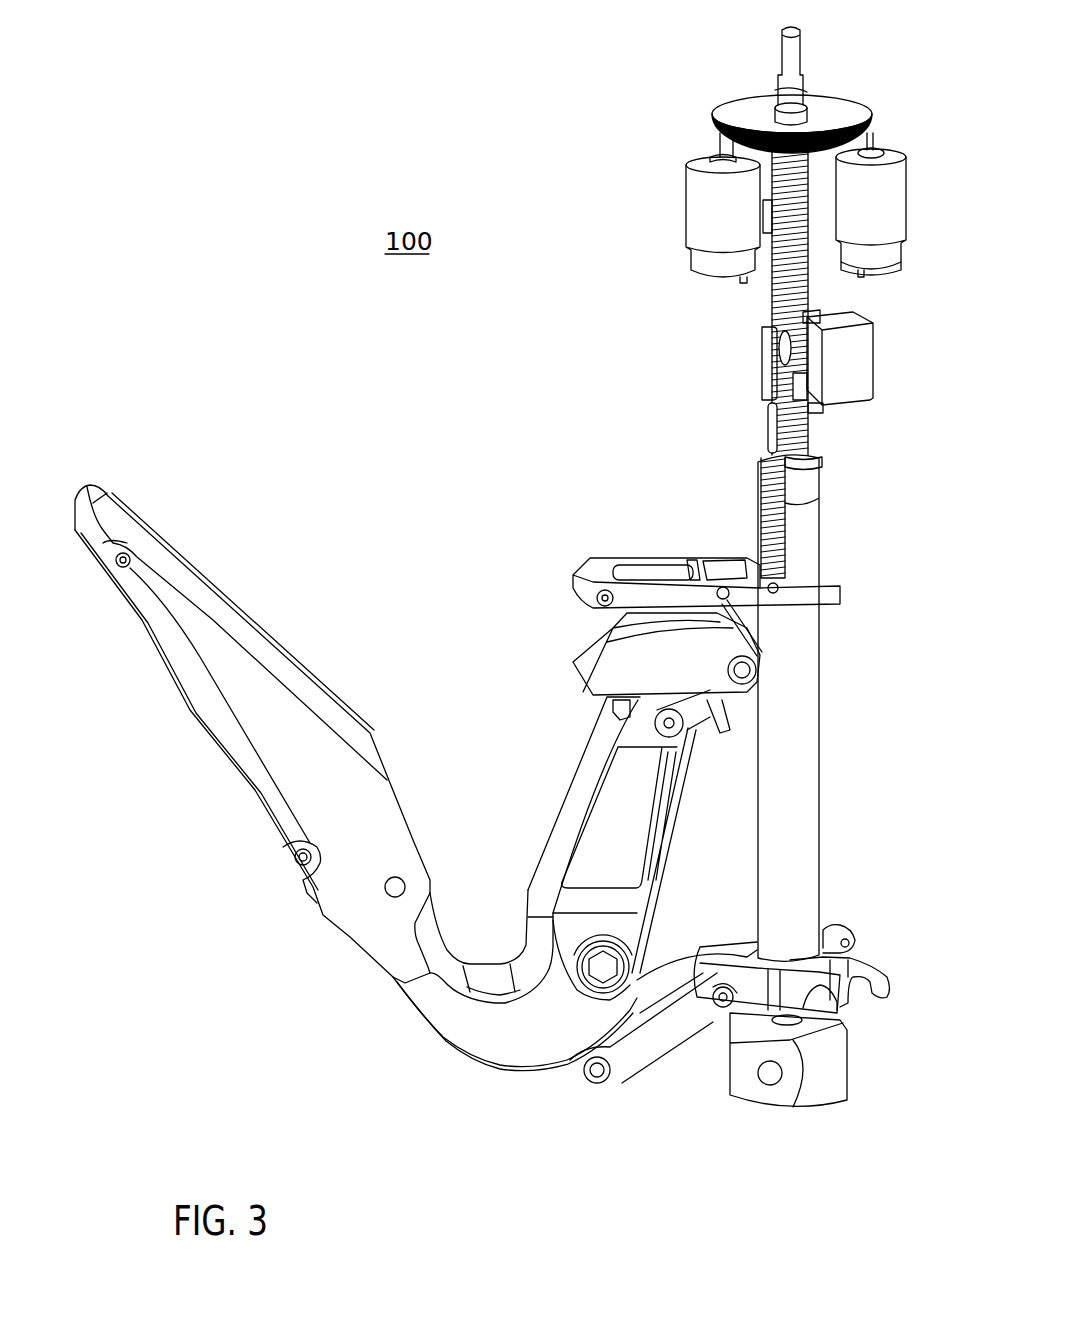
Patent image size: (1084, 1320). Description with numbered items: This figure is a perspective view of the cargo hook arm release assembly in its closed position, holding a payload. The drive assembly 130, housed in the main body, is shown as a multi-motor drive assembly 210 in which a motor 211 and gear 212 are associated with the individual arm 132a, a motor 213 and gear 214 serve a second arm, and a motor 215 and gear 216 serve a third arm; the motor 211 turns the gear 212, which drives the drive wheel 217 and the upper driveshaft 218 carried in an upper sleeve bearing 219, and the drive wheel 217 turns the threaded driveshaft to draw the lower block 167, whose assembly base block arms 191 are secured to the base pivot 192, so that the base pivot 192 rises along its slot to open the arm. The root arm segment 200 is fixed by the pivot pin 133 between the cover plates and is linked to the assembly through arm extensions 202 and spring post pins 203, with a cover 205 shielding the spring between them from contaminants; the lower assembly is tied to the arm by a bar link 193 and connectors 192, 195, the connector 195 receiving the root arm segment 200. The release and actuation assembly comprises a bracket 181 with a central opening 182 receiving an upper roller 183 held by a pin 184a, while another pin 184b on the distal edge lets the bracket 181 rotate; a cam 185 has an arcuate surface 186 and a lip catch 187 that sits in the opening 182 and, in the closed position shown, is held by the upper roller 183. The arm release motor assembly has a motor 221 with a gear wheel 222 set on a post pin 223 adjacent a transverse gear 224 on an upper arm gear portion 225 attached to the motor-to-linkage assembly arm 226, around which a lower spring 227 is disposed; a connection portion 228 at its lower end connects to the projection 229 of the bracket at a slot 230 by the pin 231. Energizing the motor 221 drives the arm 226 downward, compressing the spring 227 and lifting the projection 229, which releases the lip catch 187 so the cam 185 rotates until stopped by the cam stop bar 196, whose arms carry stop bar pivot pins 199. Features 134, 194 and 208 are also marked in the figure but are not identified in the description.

The drive assembly 130 is at (807, 730).
The arm 132a is at (384, 631).
The pivot pin 133 is at (663, 972).
The hole 134 is at (384, 887).
The lower block 167 is at (807, 1053).
The bracket 181 is at (590, 565).
The central opening 182 is at (635, 565).
The upper roller 183 is at (712, 565).
The pin 184a is at (733, 607).
The pin 184b is at (598, 597).
The cam 185 is at (752, 678).
The arcuate surface 186 is at (605, 645).
The lip catch 187 is at (690, 572).
The assembly base block arms 191 is at (703, 967).
The base pivot 192 is at (722, 1008).
The bar link 193 is at (677, 1045).
The arm 194 is at (613, 967).
The connector 195 is at (588, 1080).
The cam stop bar 196 is at (717, 723).
The stop bar pivot pin 199 is at (675, 740).
The root arm segment 200 is at (447, 930).
The arm extensions 202 is at (187, 583).
The spring post pins 203 is at (137, 557).
The cover 205 is at (240, 778).
The arm edge 208 is at (543, 1068).
The multi-motor drive assembly 210 is at (624, 145).
The motor 211 is at (903, 182).
The gear 212 is at (873, 137).
The motor 213 is at (697, 220).
The gear 214 is at (720, 147).
The motor 215 is at (767, 238).
The gear 216 is at (772, 88).
The drive wheel 217 is at (720, 100).
The upper driveshaft 218 is at (790, 67).
The upper sleeve bearing 219 is at (780, 118).
The motor 221 is at (845, 300).
The gear wheel 222 is at (810, 373).
The post pin 223 is at (772, 348).
The transverse gear 224 is at (760, 355).
The upper arm gear portion 225 is at (797, 393).
The motor-to-linkage assembly arm 226 is at (773, 423).
The lower spring 227 is at (763, 470).
The connection portion 228 is at (780, 587).
The projection 229 is at (773, 600).
The slot 230 is at (777, 590).
The pin 231 is at (790, 588).